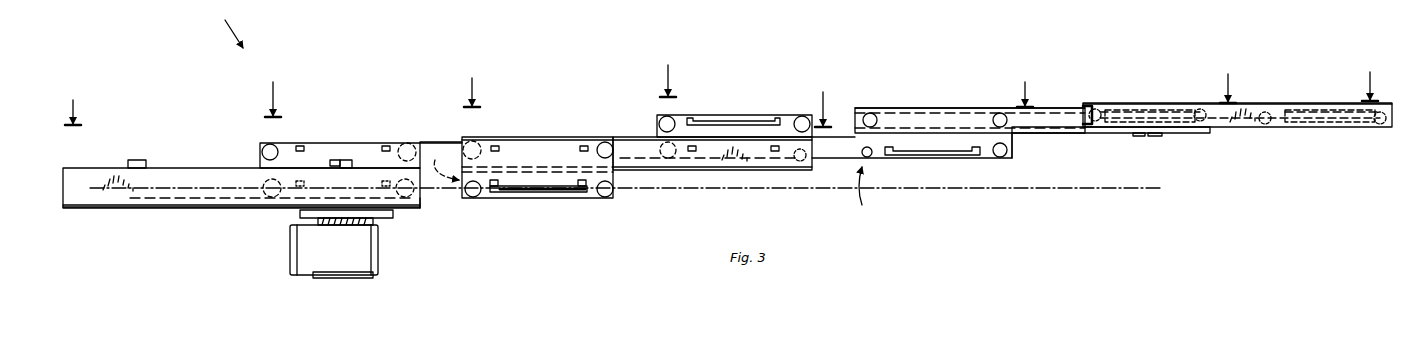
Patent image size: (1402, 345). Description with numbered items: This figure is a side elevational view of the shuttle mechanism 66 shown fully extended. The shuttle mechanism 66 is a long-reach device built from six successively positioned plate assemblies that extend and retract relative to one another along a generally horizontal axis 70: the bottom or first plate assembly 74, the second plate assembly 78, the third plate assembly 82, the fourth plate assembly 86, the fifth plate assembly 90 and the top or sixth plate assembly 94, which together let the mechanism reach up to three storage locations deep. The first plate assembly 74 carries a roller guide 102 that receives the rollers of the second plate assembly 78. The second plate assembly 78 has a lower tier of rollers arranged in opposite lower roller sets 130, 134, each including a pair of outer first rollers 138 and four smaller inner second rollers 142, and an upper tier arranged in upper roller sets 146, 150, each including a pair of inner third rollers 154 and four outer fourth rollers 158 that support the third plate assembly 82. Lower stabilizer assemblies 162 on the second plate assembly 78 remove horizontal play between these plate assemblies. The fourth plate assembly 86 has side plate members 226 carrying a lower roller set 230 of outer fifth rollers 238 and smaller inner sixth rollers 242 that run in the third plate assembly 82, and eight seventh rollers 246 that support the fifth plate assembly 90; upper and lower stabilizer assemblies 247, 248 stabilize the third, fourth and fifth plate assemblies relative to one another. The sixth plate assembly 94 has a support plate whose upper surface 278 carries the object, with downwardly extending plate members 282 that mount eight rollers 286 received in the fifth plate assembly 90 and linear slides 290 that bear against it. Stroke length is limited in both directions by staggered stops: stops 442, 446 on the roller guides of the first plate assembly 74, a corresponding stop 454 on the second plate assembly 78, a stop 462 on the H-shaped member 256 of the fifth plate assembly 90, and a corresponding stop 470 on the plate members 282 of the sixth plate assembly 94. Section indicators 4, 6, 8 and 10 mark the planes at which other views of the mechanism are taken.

The shuttle mechanism 66 is at (224, 26).
The horizontal axis 70 is at (1163, 188).
The first plate assembly 74 is at (181, 166).
The second plate assembly 78 is at (257, 152).
The third plate assembly 82 is at (642, 136).
The fourth plate assembly 86 is at (1014, 146).
The fifth plate assembly 90 is at (1053, 108).
The sixth plate assembly 94 is at (1280, 103).
The roller guide 102 is at (137, 200).
The lower roller set 130 is at (421, 200).
The lower roller set 134 is at (658, 183).
The first rollers 138 is at (268, 186).
The second rollers 142 is at (402, 202).
The upper roller set 146 is at (424, 146).
The upper roller set 150 is at (472, 142).
The third rollers 154 is at (405, 144).
The fourth rollers 158 is at (269, 144).
The lower stabilizer assembly 162 is at (560, 193).
The side plate member 226 is at (844, 110).
The lower roller set 230 is at (850, 162).
The fifth rollers 238 is at (680, 172).
The sixth rollers 242 is at (778, 170).
The seventh rollers 246 is at (668, 116).
The upper stabilizer assembly 247 is at (741, 118).
The lower stabilizer assembly 248 is at (938, 155).
The H-shaped member 256 is at (1068, 134).
The upper surface 278 is at (1255, 104).
The plate member 282 is at (1248, 128).
The rollers 286 is at (1095, 107).
The linear slides 290 is at (1105, 114).
The stop 442 is at (347, 160).
The stop 446 is at (137, 160).
The stop 454 is at (334, 160).
The stop 462 is at (1155, 136).
The stop 470 is at (1138, 136).
The section line 4 is at (448, 102).
The section line 6 is at (649, 92).
The section line 8 is at (850, 83).
The section line 10 is at (1019, 76).